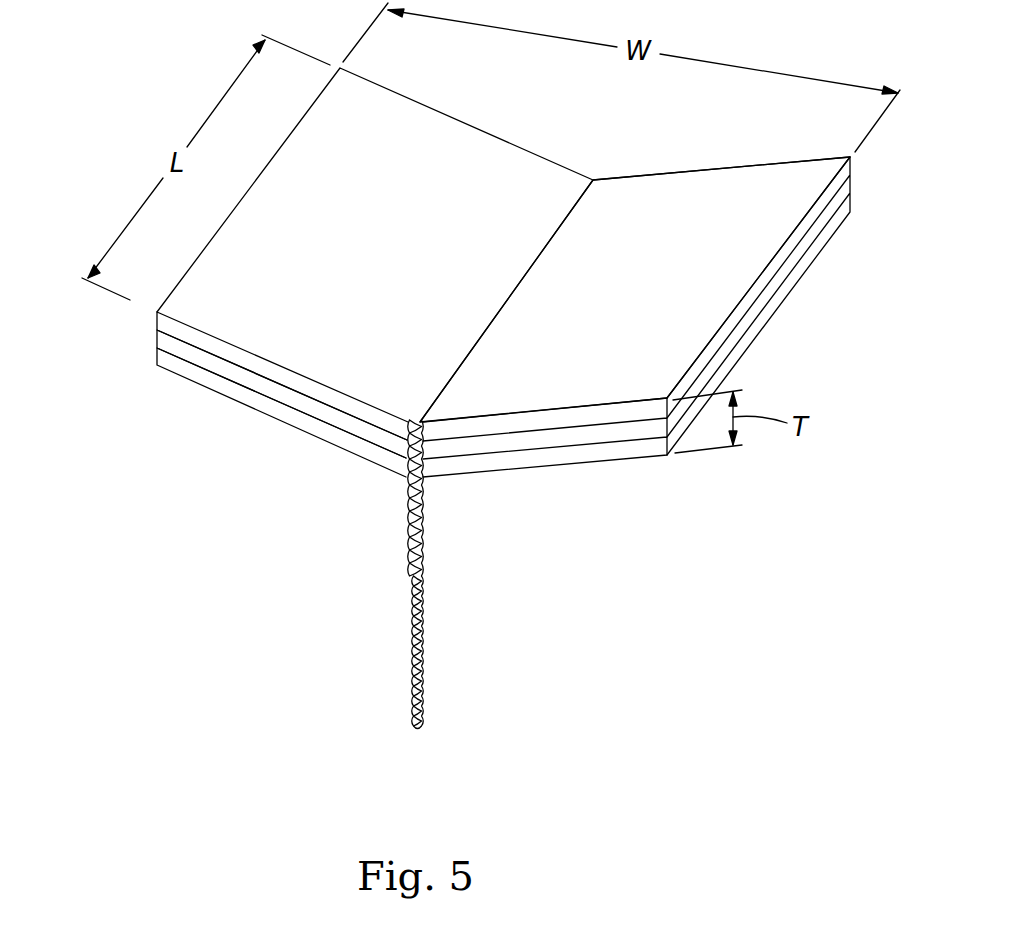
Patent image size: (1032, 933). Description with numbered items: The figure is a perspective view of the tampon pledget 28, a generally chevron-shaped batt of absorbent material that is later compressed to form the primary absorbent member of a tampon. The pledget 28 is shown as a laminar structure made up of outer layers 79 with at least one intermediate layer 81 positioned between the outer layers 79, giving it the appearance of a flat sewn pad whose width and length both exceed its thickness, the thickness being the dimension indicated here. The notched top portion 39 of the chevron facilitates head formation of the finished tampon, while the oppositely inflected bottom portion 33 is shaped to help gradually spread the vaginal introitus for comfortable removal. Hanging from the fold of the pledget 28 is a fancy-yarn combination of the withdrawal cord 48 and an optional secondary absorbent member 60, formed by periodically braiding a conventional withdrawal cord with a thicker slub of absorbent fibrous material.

The tampon pledget 28 is at (703, 292).
The bottom portion 33 is at (612, 472).
The top portion 39 is at (702, 188).
The withdrawal cord 48 is at (422, 667).
The secondary absorbent member 60 is at (423, 555).
The outer layers 79 is at (175, 330).
The intermediate layer 81 is at (187, 355).